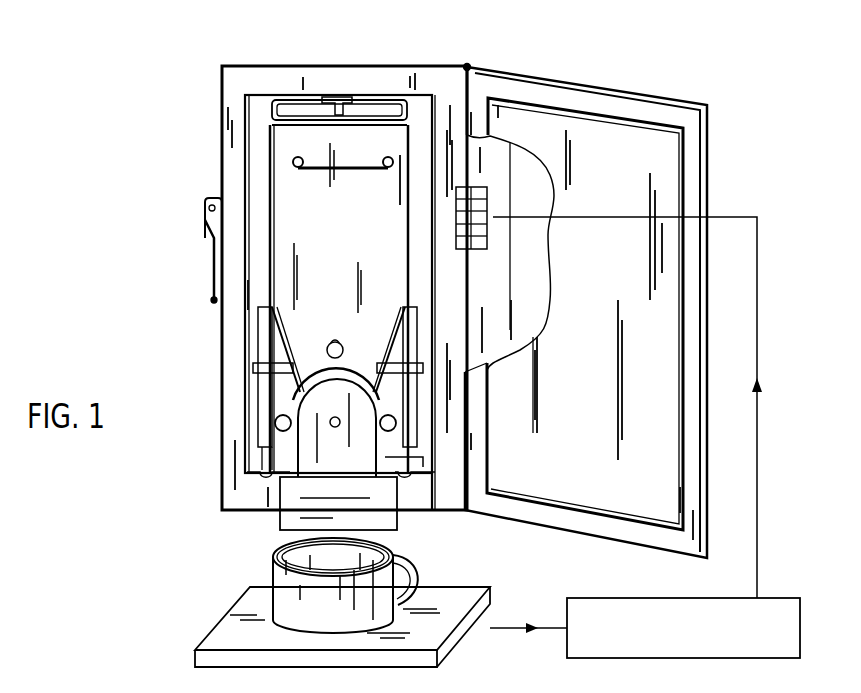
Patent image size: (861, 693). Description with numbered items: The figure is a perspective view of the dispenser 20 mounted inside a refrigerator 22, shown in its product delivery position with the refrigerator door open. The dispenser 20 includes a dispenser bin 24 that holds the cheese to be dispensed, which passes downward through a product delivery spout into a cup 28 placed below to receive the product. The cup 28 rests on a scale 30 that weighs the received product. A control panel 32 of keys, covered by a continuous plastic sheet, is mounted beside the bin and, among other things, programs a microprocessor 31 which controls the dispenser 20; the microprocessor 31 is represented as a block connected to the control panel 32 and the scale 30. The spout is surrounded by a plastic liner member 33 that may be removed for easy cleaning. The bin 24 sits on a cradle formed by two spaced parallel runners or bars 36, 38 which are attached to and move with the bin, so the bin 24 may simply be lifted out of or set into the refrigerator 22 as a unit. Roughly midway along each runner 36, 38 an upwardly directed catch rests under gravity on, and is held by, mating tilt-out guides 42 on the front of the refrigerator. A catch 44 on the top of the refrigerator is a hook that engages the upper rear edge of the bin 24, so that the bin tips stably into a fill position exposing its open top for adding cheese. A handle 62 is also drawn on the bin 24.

The dispenser 20 is at (745, 176).
The refrigerator 22 is at (222, 88).
The dispenser bin 24 is at (258, 172).
The cup 28 is at (290, 596).
The scale 30 is at (483, 615).
The microprocessor 31 is at (686, 648).
The control panel 32 is at (470, 250).
The plastic liner member 33 is at (290, 505).
The runner 36 is at (262, 393).
The runner 38 is at (412, 413).
The tilt-out guides 42 is at (262, 470).
The catch 44 is at (353, 97).
The handle 62 is at (352, 172).